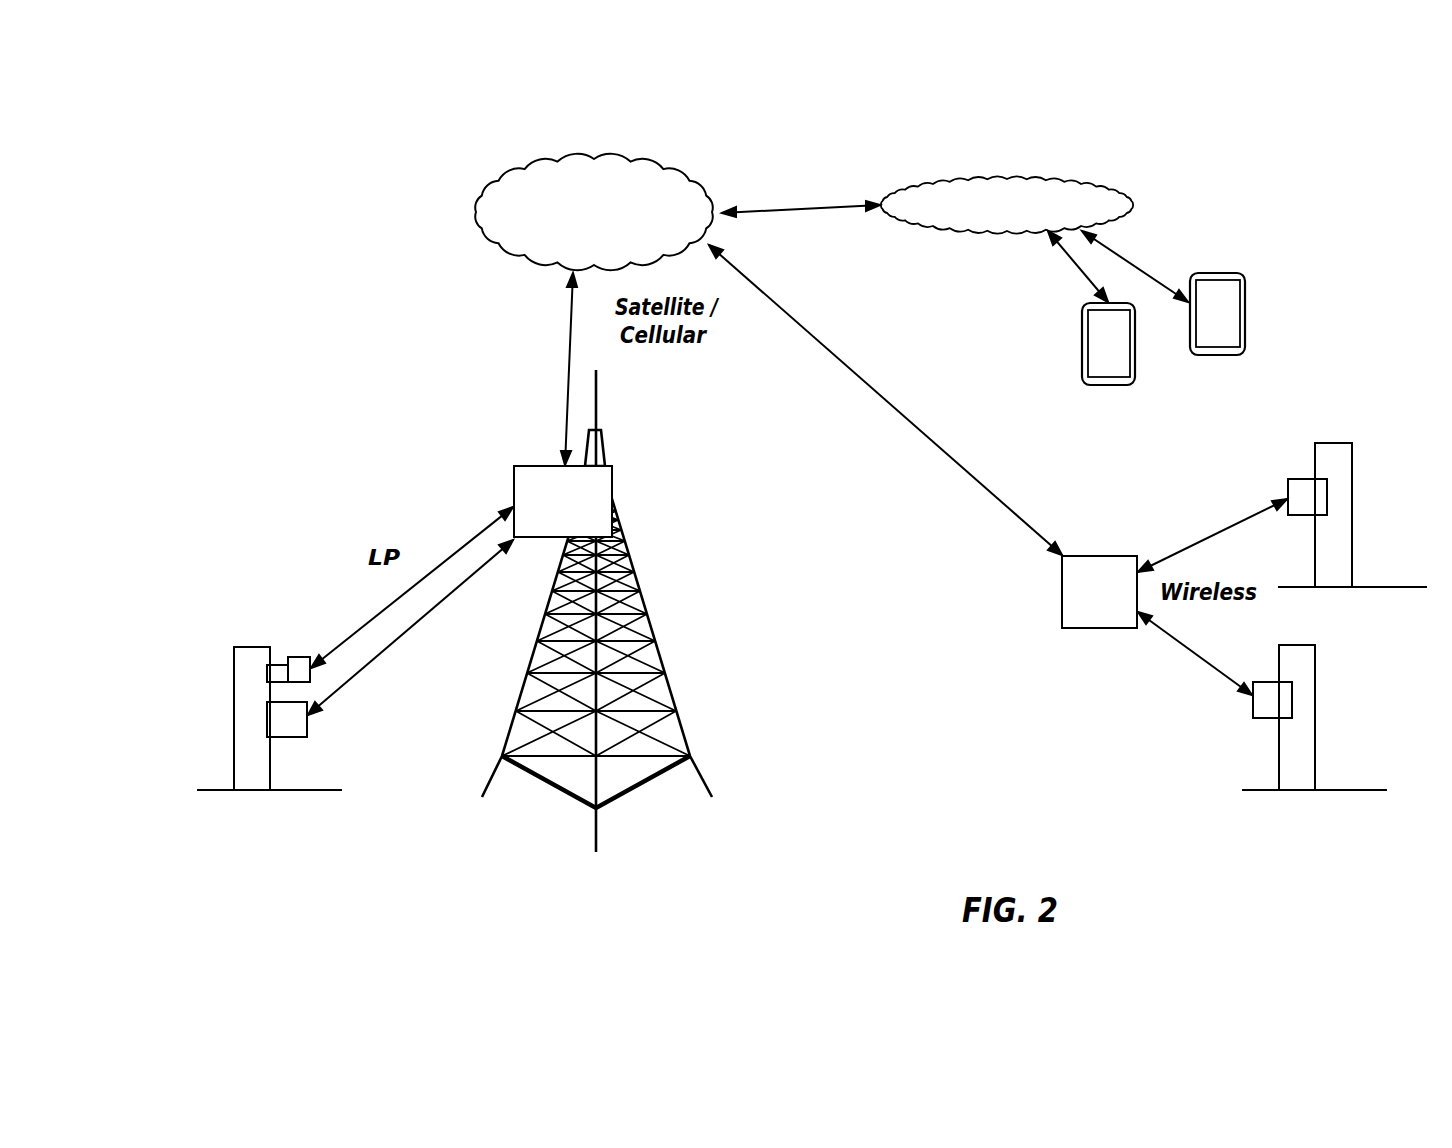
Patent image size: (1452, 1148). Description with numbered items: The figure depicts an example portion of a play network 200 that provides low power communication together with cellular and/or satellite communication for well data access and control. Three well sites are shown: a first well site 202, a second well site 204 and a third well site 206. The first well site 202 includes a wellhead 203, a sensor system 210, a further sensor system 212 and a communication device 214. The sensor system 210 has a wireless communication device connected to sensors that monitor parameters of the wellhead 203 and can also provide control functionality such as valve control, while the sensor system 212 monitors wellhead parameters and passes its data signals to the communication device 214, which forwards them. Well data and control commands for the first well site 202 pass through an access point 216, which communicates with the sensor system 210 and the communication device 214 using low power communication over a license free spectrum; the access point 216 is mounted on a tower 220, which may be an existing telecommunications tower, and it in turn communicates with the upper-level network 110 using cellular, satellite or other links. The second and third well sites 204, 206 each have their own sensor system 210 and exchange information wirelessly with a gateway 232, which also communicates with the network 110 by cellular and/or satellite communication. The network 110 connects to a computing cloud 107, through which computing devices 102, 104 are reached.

The play network 200 is at (252, 304).
The network 110 is at (697, 180).
The computing cloud 107 is at (1136, 205).
The computing device 102 is at (1245, 312).
The computing device 104 is at (1082, 343).
The access point 216 is at (612, 477).
The tower 220 is at (657, 660).
The gateway 232 is at (1062, 618).
The first well site 202 is at (255, 681).
The wellhead 203 is at (270, 765).
The sensor system 212 is at (278, 665).
The communication device 214 is at (298, 657).
The sensor system 210 is at (307, 723).
The second well site 204 is at (1369, 449).
The third well site 206 is at (1342, 666).